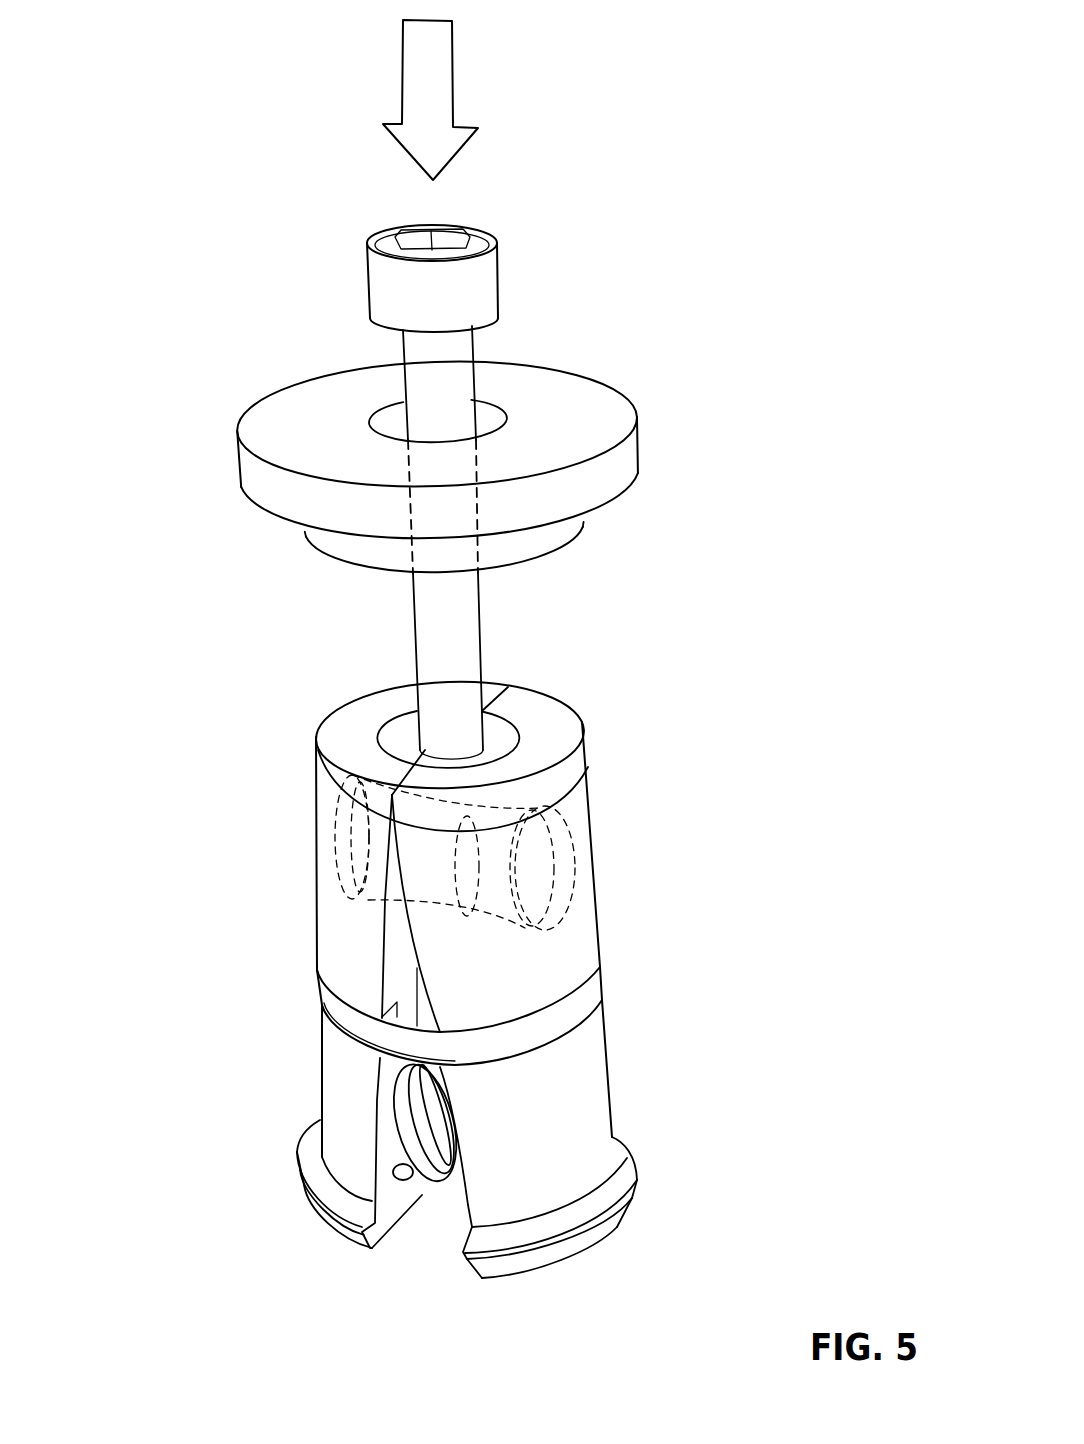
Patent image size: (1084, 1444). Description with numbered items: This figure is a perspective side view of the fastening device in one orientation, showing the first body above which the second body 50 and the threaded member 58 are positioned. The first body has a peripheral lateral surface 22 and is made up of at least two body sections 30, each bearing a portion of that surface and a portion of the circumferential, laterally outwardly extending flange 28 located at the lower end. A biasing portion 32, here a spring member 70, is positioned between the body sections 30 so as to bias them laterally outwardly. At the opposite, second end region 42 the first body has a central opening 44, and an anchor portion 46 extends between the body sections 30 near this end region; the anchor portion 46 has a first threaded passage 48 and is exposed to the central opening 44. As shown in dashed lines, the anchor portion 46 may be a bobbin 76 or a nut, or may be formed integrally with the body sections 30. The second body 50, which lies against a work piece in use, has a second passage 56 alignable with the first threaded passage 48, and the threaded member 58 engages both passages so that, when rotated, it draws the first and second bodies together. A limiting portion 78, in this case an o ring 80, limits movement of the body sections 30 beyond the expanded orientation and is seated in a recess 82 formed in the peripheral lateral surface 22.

The peripheral lateral surface 22 is at (317, 952).
The flange 28 is at (637, 1182).
The body sections 30 is at (328, 1092).
The biasing portion 32 is at (387, 1290).
The second end region 42 is at (623, 680).
The central opening 44 is at (427, 750).
The anchor portion 46 is at (573, 832).
The first threaded passage 48 is at (447, 822).
The second body 50 is at (608, 391).
The second passage 56 is at (490, 405).
The threaded member 58 is at (493, 413).
The spring member 70 is at (446, 1188).
The bobbin 76 is at (557, 890).
The limiting portion 78 is at (637, 965).
The o ring 80 is at (330, 1000).
The recess 82 is at (577, 1027).